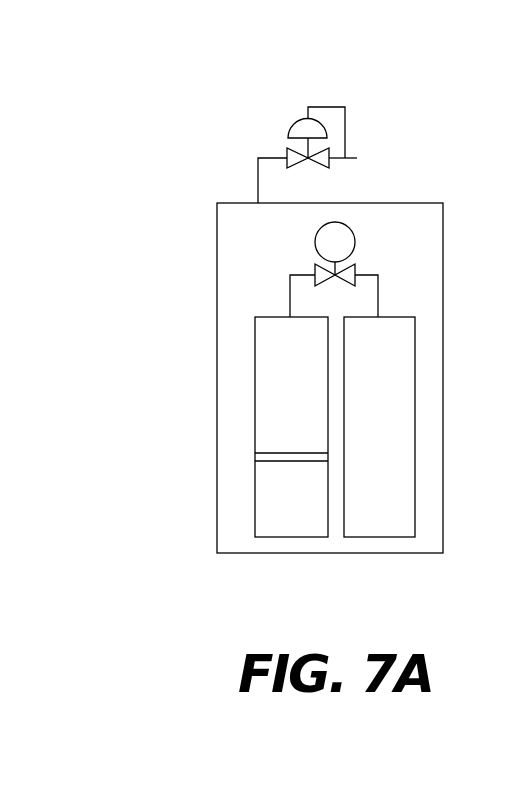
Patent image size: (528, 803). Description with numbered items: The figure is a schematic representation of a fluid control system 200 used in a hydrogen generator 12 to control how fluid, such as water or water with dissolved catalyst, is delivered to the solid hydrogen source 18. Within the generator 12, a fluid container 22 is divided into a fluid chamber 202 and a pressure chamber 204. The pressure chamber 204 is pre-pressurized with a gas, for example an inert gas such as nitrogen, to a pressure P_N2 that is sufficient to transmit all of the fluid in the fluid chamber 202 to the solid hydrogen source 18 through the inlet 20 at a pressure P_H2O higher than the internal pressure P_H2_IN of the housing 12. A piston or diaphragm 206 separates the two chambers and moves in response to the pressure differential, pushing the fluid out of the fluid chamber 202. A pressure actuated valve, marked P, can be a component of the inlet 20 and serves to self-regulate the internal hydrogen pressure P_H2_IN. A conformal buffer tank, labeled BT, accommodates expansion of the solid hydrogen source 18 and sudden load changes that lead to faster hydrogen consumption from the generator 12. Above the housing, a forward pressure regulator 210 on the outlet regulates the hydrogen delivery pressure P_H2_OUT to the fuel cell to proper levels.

The fluid control system 200 is at (201, 203).
The forward pressure regulator 210 is at (328, 99).
The generator 12 is at (445, 255).
The inlet 20 is at (380, 292).
The fluid chamber 202 is at (265, 345).
The fluid container 22 is at (258, 391).
The piston or diaphragm 206 is at (257, 456).
The pressure chamber 204 is at (263, 516).
The solid hydrogen source 18 is at (410, 455).